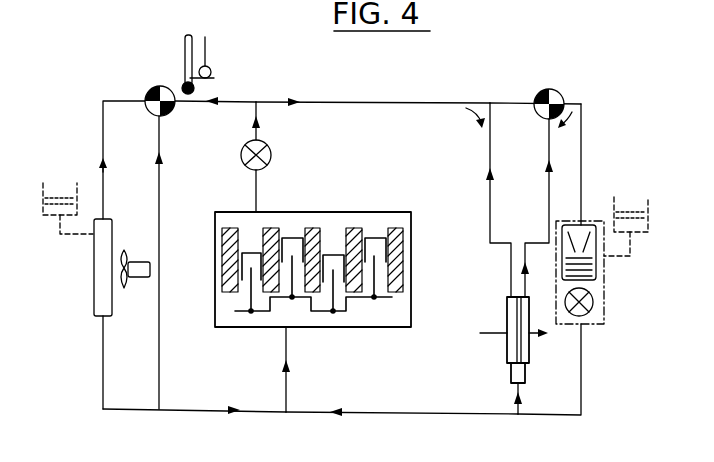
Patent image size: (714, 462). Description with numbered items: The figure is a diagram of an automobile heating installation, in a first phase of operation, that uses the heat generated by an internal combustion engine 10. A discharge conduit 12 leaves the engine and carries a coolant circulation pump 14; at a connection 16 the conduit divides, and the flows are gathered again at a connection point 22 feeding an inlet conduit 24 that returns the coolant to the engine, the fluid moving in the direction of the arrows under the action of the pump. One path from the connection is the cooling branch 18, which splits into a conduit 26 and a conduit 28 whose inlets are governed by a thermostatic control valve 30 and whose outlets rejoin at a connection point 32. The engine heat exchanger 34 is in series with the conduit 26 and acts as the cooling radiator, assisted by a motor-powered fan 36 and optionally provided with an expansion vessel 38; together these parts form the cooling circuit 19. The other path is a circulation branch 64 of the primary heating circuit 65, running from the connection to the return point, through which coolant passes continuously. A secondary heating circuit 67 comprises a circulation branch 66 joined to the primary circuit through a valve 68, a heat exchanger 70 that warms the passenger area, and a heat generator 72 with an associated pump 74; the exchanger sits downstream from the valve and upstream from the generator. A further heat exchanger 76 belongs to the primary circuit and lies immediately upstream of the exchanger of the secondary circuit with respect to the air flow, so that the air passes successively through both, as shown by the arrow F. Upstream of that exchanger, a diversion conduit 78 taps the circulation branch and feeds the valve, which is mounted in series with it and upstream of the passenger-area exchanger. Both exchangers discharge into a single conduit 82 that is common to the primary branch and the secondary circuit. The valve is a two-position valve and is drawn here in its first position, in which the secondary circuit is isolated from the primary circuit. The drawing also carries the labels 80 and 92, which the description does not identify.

The internal combustion engine 10 is at (383, 327).
The discharge conduit 12 is at (257, 192).
The coolant circulation pump 14 is at (271, 152).
The connection 16 is at (258, 100).
The cooling branch 18 is at (237, 100).
The cooling circuit 19 is at (202, 196).
The connection point 22 is at (280, 418).
The inlet conduit 24 is at (286, 378).
The conduit 26 is at (103, 131).
The conduit 28 is at (165, 133).
The thermostatic control valve 30 is at (150, 88).
The connection point 32 is at (159, 409).
The engine heat exchanger 34 is at (94, 268).
The motor-powered fan 36 is at (138, 277).
The expansion vessel 38 is at (42, 210).
The circulation branch 64 is at (385, 102).
The primary heating circuit 65 is at (470, 232).
The circulation branch 66 is at (581, 385).
The secondary heating circuit 67 is at (566, 406).
The valve 68 is at (553, 88).
The heat exchanger 70 is at (529, 348).
The heat generator 72 is at (604, 268).
The pump 74 is at (594, 308).
The heat exchanger 76 is at (507, 350).
The diversion conduit 78 is at (514, 103).
The line 80 is at (490, 103).
The conduit 82 is at (515, 414).
The fuel tank 92 is at (648, 214).